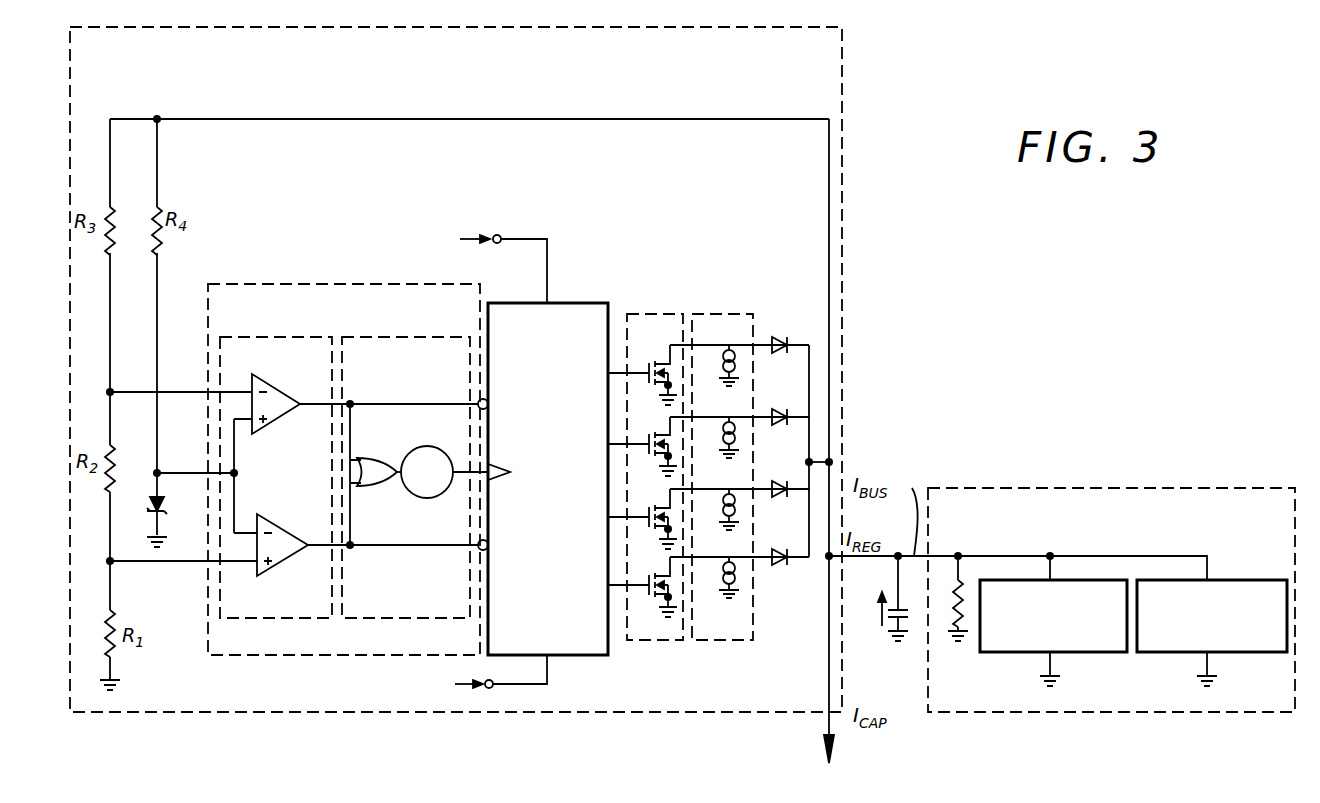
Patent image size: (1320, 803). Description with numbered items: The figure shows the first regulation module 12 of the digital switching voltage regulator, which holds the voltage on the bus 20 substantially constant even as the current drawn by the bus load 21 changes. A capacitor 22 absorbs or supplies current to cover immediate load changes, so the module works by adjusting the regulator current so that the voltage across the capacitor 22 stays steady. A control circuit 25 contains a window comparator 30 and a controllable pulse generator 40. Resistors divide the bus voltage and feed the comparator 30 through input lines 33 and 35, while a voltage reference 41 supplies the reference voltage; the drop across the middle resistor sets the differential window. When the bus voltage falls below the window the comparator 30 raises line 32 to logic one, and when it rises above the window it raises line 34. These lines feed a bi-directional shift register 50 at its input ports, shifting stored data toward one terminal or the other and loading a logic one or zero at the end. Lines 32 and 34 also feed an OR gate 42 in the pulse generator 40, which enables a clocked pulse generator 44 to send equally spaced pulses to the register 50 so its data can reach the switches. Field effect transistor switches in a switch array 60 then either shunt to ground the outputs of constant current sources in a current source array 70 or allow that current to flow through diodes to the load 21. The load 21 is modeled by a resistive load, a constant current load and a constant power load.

The first regulation module 12 is at (842, 71).
The bus 20 is at (868, 560).
The bus load 21 is at (1207, 712).
The capacitor 22 is at (905, 600).
The control circuit 25 is at (270, 284).
The window comparator 30 is at (252, 337).
The line 32 is at (306, 414).
The input line 33 is at (183, 394).
The line 34 is at (308, 530).
The input line 35 is at (163, 563).
The controllable pulse generator 40 is at (398, 337).
The voltage reference 41 is at (165, 498).
The OR gate 42 is at (376, 487).
The clocked pulse generator 44 is at (425, 498).
The bi-directional shift register 50 is at (592, 303).
The switch array 60 is at (653, 314).
The current source array 70 is at (722, 314).